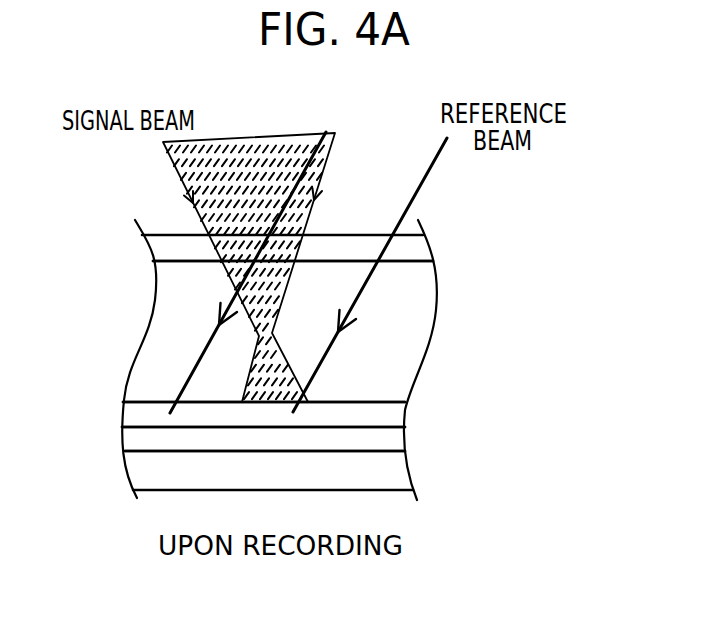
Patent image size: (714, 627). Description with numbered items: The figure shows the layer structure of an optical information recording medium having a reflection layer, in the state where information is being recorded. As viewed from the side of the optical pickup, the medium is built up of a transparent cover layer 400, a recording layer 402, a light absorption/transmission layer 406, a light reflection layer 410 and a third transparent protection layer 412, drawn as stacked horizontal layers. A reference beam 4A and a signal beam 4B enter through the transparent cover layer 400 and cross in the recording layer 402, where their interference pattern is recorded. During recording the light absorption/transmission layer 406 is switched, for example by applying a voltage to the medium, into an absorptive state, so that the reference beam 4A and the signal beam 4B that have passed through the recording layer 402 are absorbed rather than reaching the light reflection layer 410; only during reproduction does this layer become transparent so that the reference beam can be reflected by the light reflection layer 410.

The transparent cover layer 400 is at (415, 252).
The recording layer 402 is at (417, 340).
The light absorption/transmission layer 406 is at (395, 415).
The light reflection layer 410 is at (393, 439).
The third transparent protection layer 412 is at (395, 475).
The reference beam 4A is at (372, 160).
The signal beam 4B is at (258, 160).